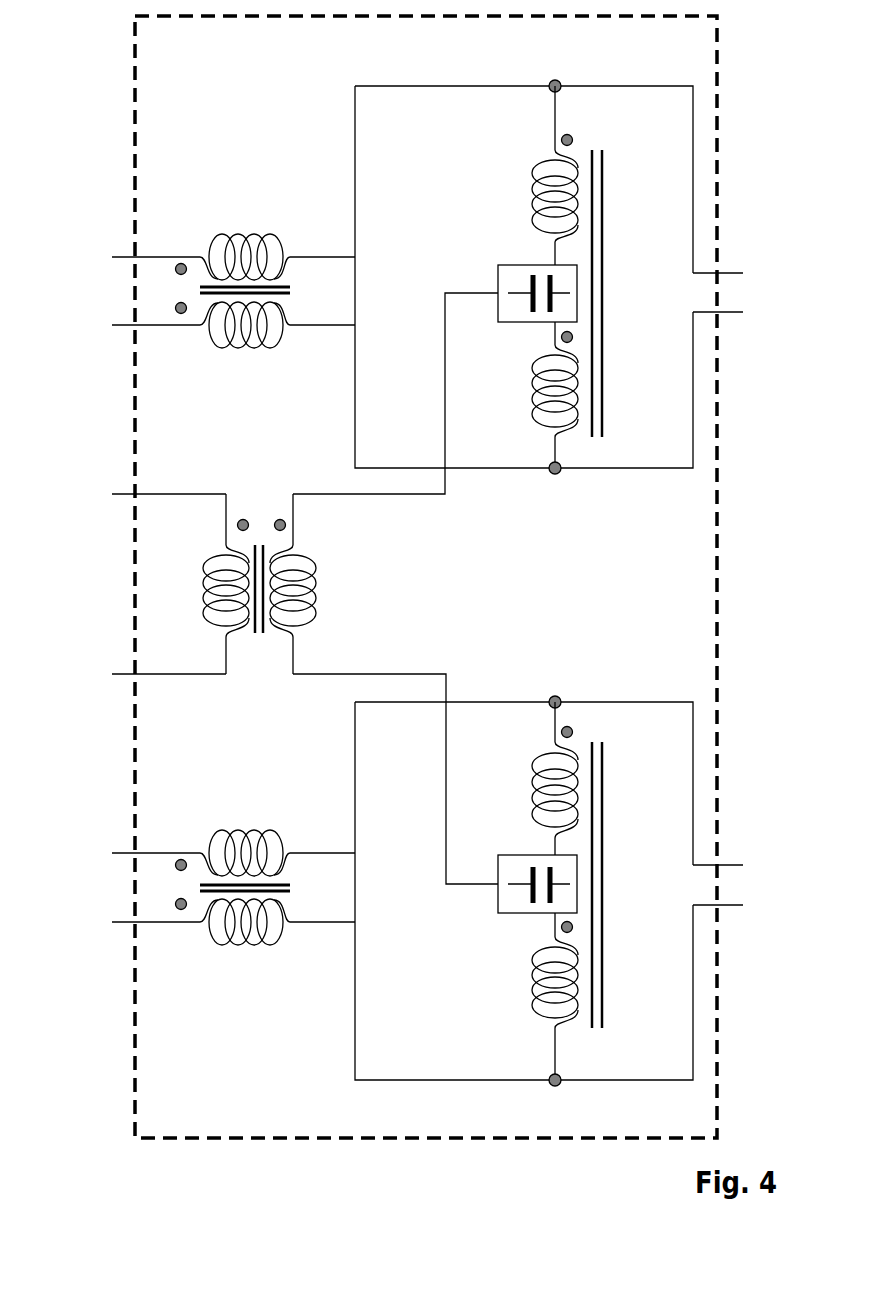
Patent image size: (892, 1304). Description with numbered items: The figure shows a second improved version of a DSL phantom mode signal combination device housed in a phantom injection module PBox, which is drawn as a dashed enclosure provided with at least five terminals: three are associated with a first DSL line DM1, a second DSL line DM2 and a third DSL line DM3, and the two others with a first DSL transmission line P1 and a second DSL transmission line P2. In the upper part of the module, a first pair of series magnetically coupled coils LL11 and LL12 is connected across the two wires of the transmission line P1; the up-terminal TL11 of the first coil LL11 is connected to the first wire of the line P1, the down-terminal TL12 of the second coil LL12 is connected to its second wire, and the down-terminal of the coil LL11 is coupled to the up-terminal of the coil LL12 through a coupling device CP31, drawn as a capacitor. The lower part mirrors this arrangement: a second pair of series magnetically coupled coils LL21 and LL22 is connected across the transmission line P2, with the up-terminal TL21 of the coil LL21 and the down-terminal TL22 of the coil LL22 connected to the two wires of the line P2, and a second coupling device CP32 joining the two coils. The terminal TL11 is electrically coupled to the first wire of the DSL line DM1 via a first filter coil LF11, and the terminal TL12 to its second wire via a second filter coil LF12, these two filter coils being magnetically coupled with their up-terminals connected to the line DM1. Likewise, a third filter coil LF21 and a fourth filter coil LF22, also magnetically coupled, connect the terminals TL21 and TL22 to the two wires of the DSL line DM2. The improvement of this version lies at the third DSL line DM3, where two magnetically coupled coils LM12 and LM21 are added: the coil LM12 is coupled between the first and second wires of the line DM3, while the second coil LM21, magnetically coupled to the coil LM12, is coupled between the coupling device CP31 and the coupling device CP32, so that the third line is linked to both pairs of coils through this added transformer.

The phantom injection module PBox is at (813, 125).
The first DSL transmission line P1 is at (741, 292).
The second DSL transmission line P2 is at (744, 885).
The first DSL line DM1 is at (117, 291).
The second DSL line DM2 is at (118, 887).
The third DSL line DM3 is at (160, 584).
The first filter coil LF11 is at (277, 243).
The second filter coil LF12 is at (277, 348).
The third filter coil LF21 is at (277, 841).
The fourth filter coil LF22 is at (277, 944).
The coil LM12 is at (219, 584).
The second coil LM21 is at (321, 584).
The up-terminal of the first coil TL11 is at (548, 65).
The down-terminal of the second coil TL12 is at (560, 488).
The up-terminal of the first coil of the second pair TL21 is at (560, 683).
The down-terminal of the second coil of the second pair TL22 is at (561, 1103).
The first coil LL11 is at (530, 261).
The second coil LL12 is at (519, 395).
The first coil of the second pair LL21 is at (531, 865).
The second coil of the second pair LL22 is at (519, 996).
The coupling device CP31 is at (435, 378).
The second coupling device CP32 is at (435, 802).